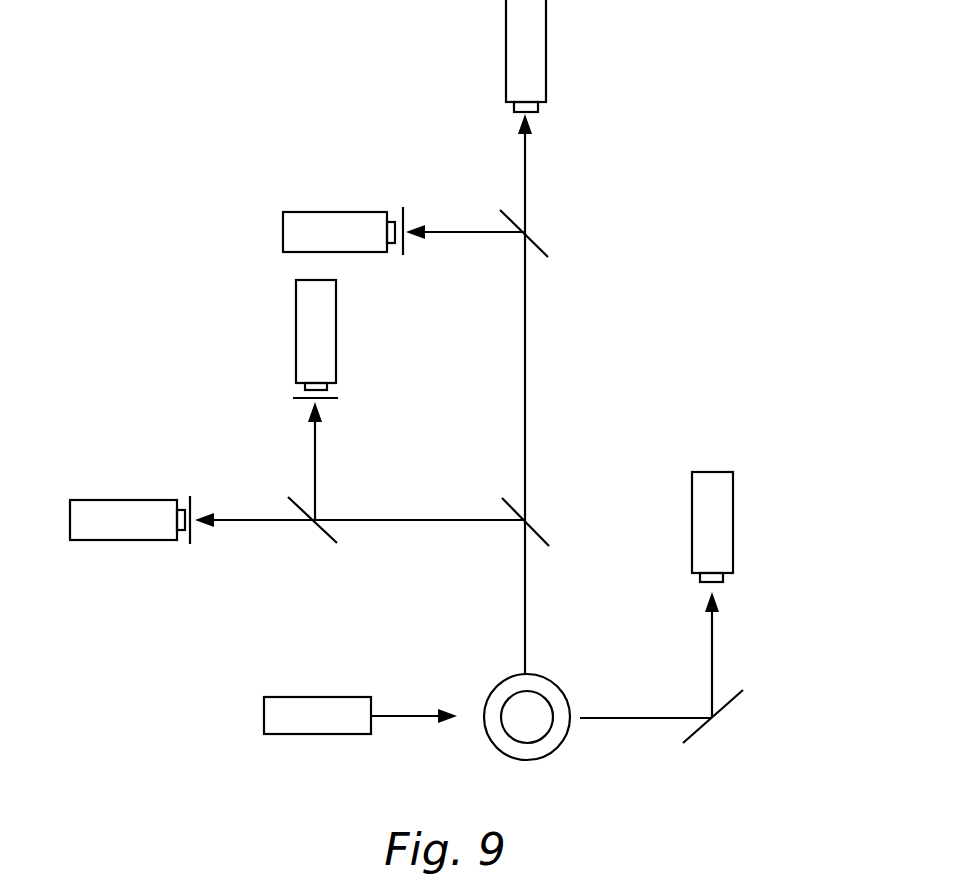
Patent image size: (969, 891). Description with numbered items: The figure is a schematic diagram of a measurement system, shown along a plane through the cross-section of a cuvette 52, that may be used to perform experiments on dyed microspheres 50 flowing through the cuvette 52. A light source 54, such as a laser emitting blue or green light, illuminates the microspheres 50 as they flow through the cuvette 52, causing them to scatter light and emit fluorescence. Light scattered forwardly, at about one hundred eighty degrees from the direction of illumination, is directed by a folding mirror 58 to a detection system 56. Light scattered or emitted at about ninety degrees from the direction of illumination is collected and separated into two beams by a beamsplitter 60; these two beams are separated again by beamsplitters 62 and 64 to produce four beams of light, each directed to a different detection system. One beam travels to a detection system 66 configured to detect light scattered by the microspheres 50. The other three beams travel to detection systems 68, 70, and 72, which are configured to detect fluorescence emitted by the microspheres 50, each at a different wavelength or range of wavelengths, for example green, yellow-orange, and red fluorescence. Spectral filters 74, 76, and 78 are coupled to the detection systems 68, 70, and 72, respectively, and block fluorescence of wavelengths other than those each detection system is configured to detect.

The microspheres 50 is at (535, 743).
The cuvette 52 is at (505, 752).
The light source 54 is at (264, 715).
The detection system 56 is at (733, 527).
The folding mirror 58 is at (733, 700).
The beamsplitter 60 is at (543, 538).
The beamsplitter 62 is at (328, 535).
The beamsplitter 64 is at (541, 248).
The detection system 66 is at (546, 50).
The detection system 68 is at (310, 212).
The detection system 70 is at (336, 340).
The detection system 72 is at (115, 500).
The spectral filter 74 is at (405, 207).
The spectral filter 76 is at (333, 400).
The spectral filter 78 is at (192, 500).